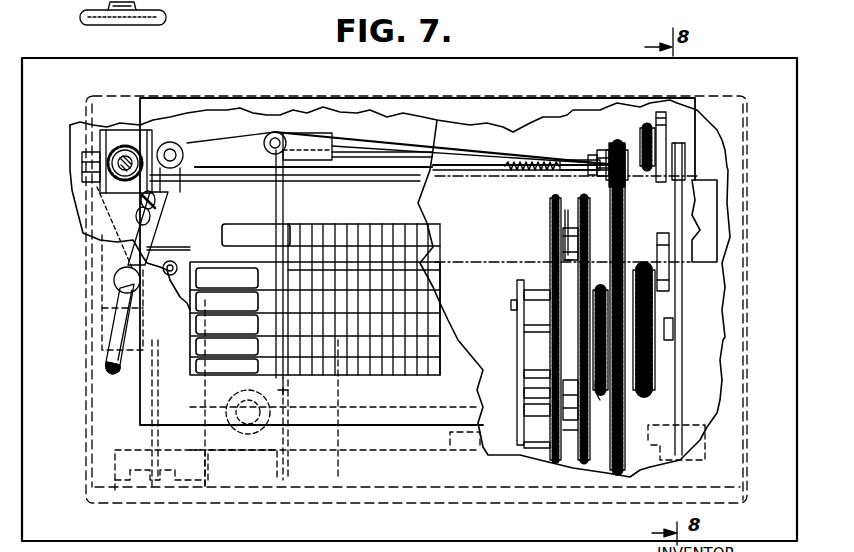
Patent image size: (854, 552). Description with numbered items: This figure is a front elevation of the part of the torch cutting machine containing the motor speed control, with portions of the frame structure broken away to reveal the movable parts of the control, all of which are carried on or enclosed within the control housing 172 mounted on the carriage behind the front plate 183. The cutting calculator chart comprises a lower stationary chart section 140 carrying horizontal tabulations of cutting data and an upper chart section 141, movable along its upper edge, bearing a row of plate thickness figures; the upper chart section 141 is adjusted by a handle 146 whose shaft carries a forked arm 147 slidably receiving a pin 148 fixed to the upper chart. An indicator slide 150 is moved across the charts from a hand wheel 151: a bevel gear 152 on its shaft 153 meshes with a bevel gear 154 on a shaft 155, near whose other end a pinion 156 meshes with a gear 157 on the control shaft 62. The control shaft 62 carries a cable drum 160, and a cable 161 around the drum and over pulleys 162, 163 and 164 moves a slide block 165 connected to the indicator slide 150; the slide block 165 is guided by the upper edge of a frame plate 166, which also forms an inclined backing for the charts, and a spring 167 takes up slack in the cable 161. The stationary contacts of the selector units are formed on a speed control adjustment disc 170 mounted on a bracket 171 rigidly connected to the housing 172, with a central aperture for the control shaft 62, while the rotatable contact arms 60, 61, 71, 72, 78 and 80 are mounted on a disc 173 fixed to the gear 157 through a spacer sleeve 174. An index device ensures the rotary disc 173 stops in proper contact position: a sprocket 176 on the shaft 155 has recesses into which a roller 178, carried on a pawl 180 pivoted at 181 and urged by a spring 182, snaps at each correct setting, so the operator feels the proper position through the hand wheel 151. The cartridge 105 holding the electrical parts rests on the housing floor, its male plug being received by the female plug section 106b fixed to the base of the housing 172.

The front plate 183 is at (84, 12).
The hand wheel 151 is at (166, 17).
The bevel gear 152 is at (120, 132).
The shaft 153 is at (115, 164).
The bevel gear 154 is at (100, 204).
The pulley 163 is at (173, 142).
The frame plate 166 is at (218, 151).
The slide block 165 is at (303, 147).
The cable 161 is at (373, 139).
The indicator slide 150 is at (285, 203).
The spring 167 is at (537, 178).
The shaft 155 is at (600, 150).
The pinion 156 is at (612, 147).
The pulley 162 is at (637, 147).
The sprocket 176 is at (660, 110).
The pulley 164 is at (612, 183).
The pin 148 is at (154, 197).
The forked arm 147 is at (143, 233).
The handle 146 is at (118, 325).
The upper chart section 141 is at (400, 217).
The lower stationary chart section 140 is at (427, 288).
The cartridge 105 is at (342, 393).
The female plug section 106b is at (282, 388).
The bracket 171 is at (530, 282).
The control housing 172 is at (537, 483).
The disc 173 is at (587, 463).
The contact arm 71 is at (550, 212).
The contact arm 72 is at (553, 230).
The control shaft 62 is at (478, 327).
The contact arm 61 is at (524, 378).
The contact arm 60 is at (524, 393).
The contact arm 80 is at (524, 410).
The speed control adjustment disc 170 is at (525, 428).
The contact arm 78 is at (524, 448).
The gear 157 is at (628, 433).
The spacer sleeve 174 is at (626, 403).
The cable drum 160 is at (657, 380).
The pawl 180 is at (683, 310).
The spring 182 is at (669, 270).
The pivot 181 is at (674, 340).
The roller 178 is at (667, 203).